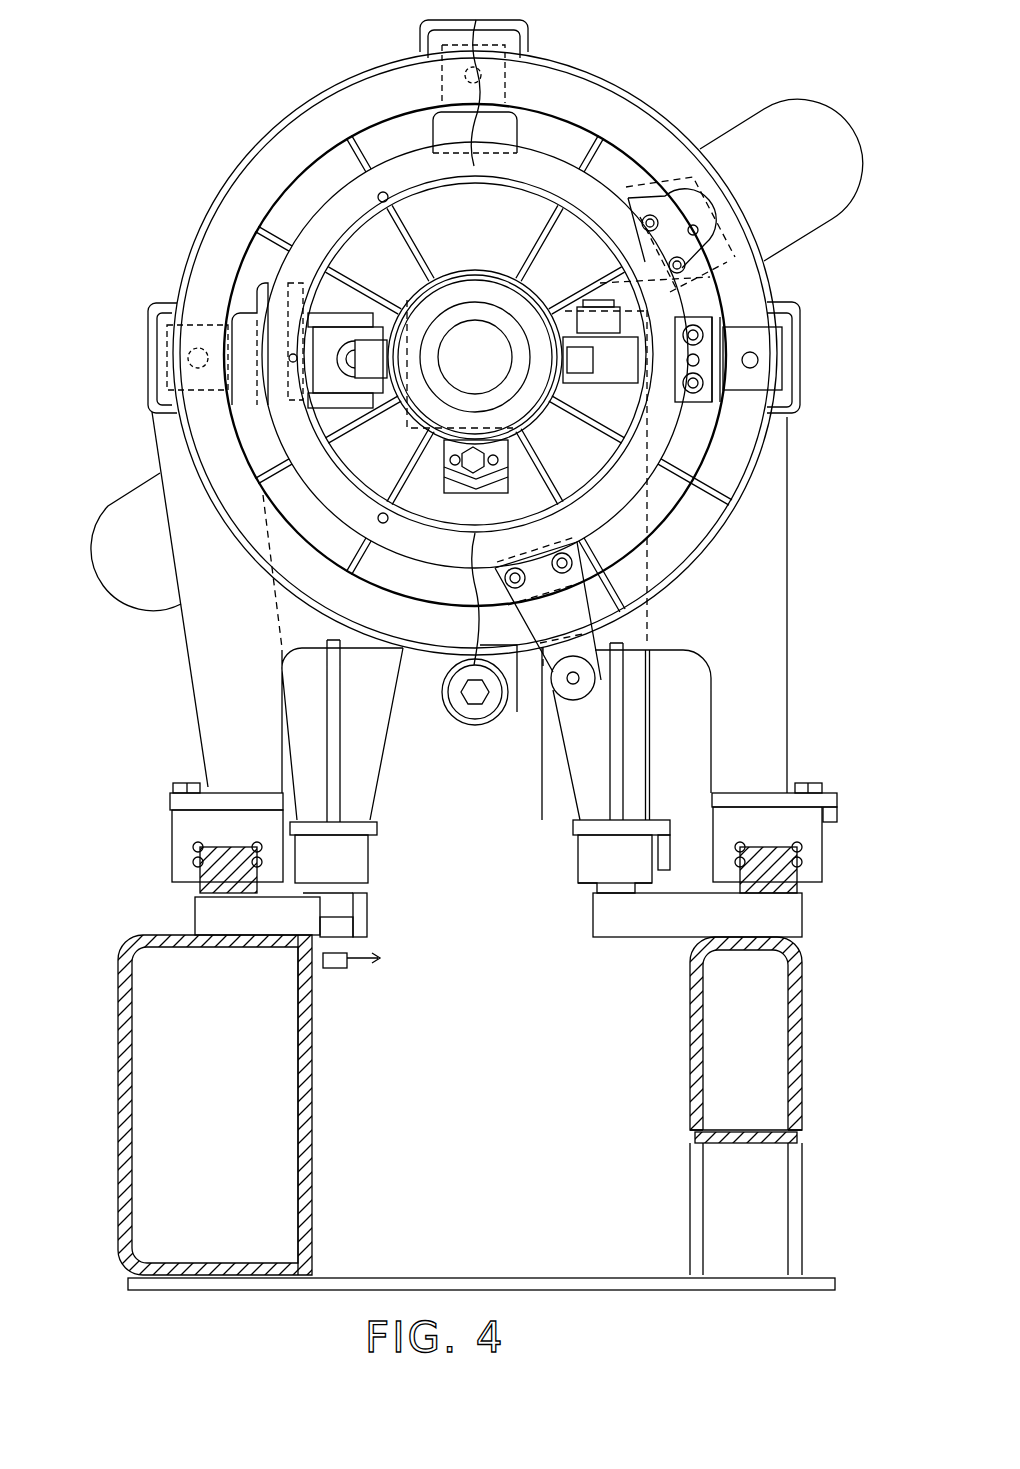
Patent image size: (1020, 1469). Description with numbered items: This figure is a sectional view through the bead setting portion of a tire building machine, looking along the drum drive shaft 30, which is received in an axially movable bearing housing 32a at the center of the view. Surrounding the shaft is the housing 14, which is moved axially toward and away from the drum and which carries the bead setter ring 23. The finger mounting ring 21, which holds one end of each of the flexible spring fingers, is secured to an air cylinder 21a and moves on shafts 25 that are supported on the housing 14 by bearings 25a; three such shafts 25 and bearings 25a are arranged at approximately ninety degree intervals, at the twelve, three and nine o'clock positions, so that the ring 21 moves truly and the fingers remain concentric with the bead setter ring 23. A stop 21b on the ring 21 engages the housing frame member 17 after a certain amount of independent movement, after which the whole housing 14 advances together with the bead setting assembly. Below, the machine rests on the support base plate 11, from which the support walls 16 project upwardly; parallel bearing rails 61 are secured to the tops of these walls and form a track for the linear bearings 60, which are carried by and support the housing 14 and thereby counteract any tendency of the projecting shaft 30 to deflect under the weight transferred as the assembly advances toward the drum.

The support base plate 11 is at (207, 1290).
The housing 14 is at (628, 104).
The support walls 16 is at (118, 1060).
The housing frame member 17 is at (558, 748).
The finger mounting ring 21 is at (617, 500).
The air cylinder 21a is at (735, 195).
The stop 21b is at (563, 613).
The bead setter ring 23 is at (202, 428).
The shaft 25 is at (485, 70).
The bearing 25a is at (500, 92).
The drum drive shaft 30 is at (468, 332).
The bearing housing 32a is at (520, 410).
The linear bearing 60 is at (177, 822).
The bearing rail 61 is at (212, 882).